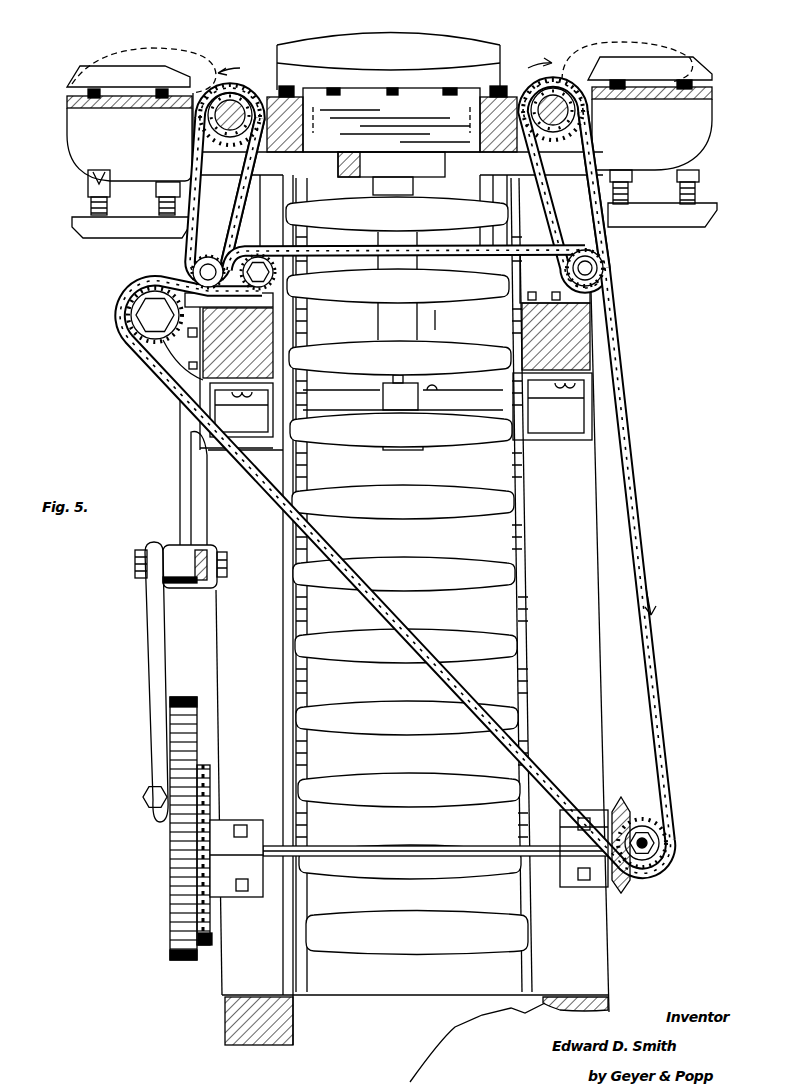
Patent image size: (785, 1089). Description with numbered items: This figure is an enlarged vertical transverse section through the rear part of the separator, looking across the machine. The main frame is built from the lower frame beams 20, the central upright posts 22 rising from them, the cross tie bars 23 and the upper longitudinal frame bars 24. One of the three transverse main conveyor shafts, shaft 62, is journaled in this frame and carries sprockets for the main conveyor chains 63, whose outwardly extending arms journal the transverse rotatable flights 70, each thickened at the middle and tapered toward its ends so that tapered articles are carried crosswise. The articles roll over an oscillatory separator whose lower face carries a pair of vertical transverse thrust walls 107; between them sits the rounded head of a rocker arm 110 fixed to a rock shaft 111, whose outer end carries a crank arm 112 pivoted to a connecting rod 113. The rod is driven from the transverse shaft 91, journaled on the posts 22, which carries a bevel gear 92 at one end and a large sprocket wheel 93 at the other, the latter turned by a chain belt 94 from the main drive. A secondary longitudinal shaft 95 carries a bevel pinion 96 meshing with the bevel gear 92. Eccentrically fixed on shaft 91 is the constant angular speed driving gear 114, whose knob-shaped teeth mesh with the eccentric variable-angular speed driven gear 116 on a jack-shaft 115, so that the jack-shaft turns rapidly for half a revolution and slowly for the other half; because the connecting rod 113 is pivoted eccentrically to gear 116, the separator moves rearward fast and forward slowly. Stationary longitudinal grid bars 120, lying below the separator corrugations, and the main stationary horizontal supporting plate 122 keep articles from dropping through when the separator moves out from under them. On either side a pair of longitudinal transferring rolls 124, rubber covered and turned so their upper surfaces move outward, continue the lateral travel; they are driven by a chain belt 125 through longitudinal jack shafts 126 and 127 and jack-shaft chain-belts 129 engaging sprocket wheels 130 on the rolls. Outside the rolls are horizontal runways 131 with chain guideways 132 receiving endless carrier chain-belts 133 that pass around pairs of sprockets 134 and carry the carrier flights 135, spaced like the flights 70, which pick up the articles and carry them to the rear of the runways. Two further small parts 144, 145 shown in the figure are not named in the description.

The lower frame beams 20 is at (298, 1030).
The central upright posts 22 is at (394, 610).
The cross tie bars 23 is at (553, 440).
The upper longitudinal frame bars 24 is at (296, 352).
The main conveyor shaft 62 is at (512, 832).
The main conveyor chains 63 is at (286, 89).
The rotatable flights 70 is at (402, 494).
The transverse shaft 91 is at (402, 858).
The bevel gear 92 is at (622, 893).
The large sprocket wheel 93 is at (215, 912).
The chain belt 94 is at (212, 943).
The secondary longitudinal shaft 95 is at (652, 858).
The bevel pinion 96 is at (670, 836).
The thrust walls 107 is at (391, 173).
The rocker arm 110 is at (406, 286).
The rock shaft 111 is at (458, 400).
The crank arm 112 is at (195, 505).
The connecting rod 113 is at (150, 658).
The constant angular speed driving gear 114 is at (176, 962).
The jack-shaft 115 is at (212, 785).
The variable-angular speed driven gear 116 is at (185, 733).
The grid bars 120 is at (392, 88).
The main stationary horizontal supporting plate 122 is at (325, 88).
The transferring rolls 124 is at (247, 88).
The chain belt 125 is at (152, 360).
The longitudinal jack shaft 126 is at (192, 270).
The longitudinal jack shaft 127 is at (606, 260).
The jack-shaft chain-belts 129 is at (233, 224).
The sprocket wheels 130 is at (202, 132).
The horizontal runways 131 is at (67, 101).
The chain guideways 132 is at (68, 110).
The carrier chain-belts 133 is at (85, 93).
The sprockets 134 is at (158, 188).
The carrier flights 135 is at (641, 256).
The nut 144 is at (217, 560).
The bolt head 145 is at (135, 566).